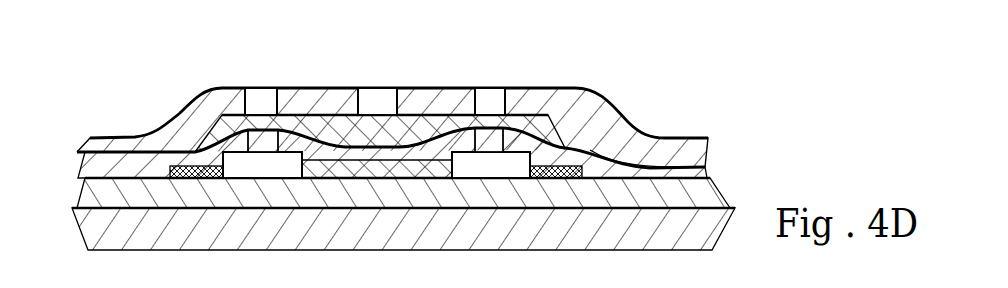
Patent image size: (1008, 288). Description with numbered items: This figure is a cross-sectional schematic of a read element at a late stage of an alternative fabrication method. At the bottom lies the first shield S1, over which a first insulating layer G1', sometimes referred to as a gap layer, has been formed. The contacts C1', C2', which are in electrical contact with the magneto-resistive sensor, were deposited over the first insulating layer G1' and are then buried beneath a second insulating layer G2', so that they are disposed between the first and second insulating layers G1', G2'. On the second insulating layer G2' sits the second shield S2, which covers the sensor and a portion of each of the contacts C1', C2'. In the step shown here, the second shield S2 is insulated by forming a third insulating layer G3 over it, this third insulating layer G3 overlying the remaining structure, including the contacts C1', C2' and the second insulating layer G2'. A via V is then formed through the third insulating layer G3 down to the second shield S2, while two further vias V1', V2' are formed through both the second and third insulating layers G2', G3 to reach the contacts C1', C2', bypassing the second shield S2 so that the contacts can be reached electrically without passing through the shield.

The first shield S1 is at (364, 236).
The second shield S2 is at (398, 140).
The first insulating layer G1' is at (403, 193).
The second insulating layer G2' is at (371, 138).
The third insulating layer G3 is at (117, 142).
The contact C1' is at (231, 117).
The contact C2' is at (534, 110).
The via V is at (377, 88).
The via V1' is at (265, 73).
The via V2' is at (506, 73).